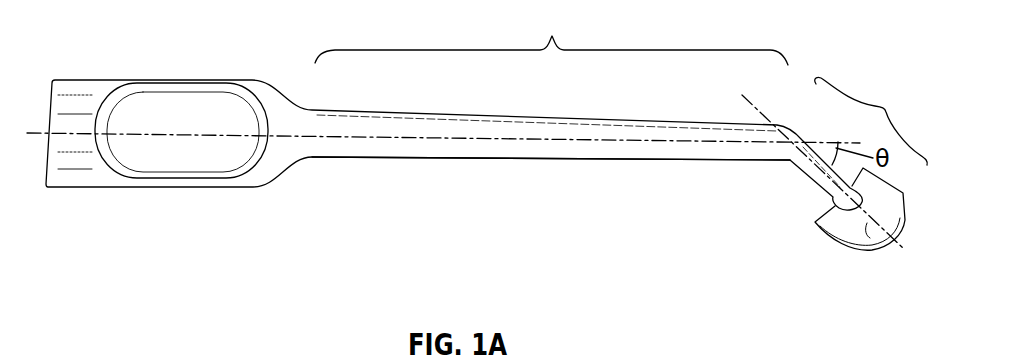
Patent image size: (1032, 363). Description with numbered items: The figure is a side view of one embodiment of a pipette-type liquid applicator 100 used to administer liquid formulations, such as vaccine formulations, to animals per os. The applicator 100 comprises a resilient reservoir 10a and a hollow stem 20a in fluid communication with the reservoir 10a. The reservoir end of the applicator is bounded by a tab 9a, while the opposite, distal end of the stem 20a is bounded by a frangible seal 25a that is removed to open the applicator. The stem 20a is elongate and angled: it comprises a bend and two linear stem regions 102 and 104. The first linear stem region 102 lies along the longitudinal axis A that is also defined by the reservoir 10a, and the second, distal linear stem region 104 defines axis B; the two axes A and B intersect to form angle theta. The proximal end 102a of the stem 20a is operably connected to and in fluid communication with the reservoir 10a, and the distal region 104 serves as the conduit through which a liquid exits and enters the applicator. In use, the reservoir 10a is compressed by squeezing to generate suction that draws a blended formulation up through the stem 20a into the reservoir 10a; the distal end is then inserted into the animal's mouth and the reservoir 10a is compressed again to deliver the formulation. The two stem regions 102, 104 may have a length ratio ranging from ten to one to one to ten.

The tab 9a is at (88, 100).
The resilient reservoir 10a is at (202, 146).
The hollow stem 20a is at (557, 138).
The frangible seal 25a is at (890, 245).
The liquid applicator 100 is at (620, 118).
The linear stem region 102 is at (550, 64).
The proximal end of stem 102a is at (324, 172).
The linear stem region 104 is at (864, 129).
The longitudinal axis A is at (52, 133).
The axis of distal stem region B is at (830, 183).